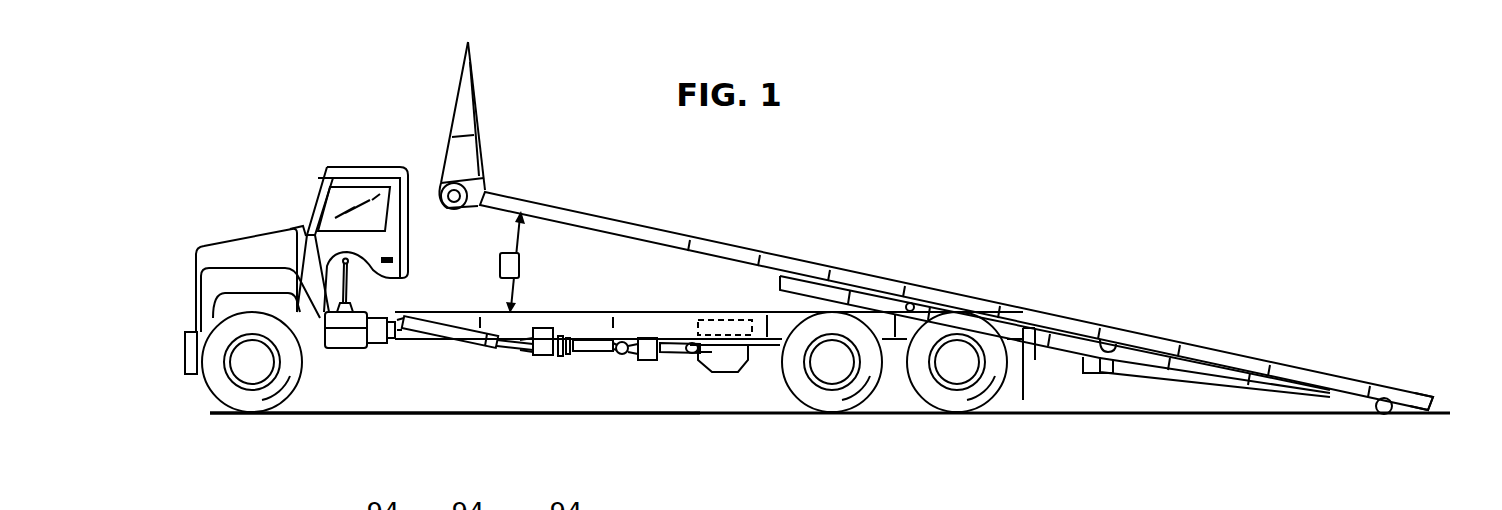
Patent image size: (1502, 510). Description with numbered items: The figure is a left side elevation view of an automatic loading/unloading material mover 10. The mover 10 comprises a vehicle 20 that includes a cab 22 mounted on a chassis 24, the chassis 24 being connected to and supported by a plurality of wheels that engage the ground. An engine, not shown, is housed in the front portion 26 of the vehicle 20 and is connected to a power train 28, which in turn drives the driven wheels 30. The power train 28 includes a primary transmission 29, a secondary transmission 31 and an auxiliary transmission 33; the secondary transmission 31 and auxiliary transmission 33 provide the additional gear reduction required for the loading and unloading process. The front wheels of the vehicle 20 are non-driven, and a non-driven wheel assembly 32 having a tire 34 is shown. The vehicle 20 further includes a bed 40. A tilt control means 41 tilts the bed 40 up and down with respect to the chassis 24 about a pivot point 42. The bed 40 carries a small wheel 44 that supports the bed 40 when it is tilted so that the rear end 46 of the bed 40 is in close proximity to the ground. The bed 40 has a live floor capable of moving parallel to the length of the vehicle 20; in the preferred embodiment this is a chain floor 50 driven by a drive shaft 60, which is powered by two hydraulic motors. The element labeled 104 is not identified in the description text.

The mover 10 is at (870, 205).
The vehicle 20 is at (206, 220).
The cab 22 is at (373, 162).
The chassis 24 is at (532, 312).
The front portion 26 is at (192, 261).
The power train 28 is at (598, 353).
The primary transmission 29 is at (345, 350).
The driven wheels 30 is at (797, 399).
The secondary transmission 31 is at (540, 357).
The non-driven wheel assembly 32 is at (248, 422).
The auxiliary transmission 33 is at (656, 362).
The tire 34 is at (208, 390).
The bed 40 is at (688, 252).
The tilt control means 41 is at (522, 262).
The pivot point 42 is at (912, 301).
The small wheel 44 is at (1386, 414).
The rear end 46 is at (1434, 400).
The chain floor 50 is at (713, 238).
The drive shaft 60 is at (462, 206).
The mast 104 is at (449, 213).